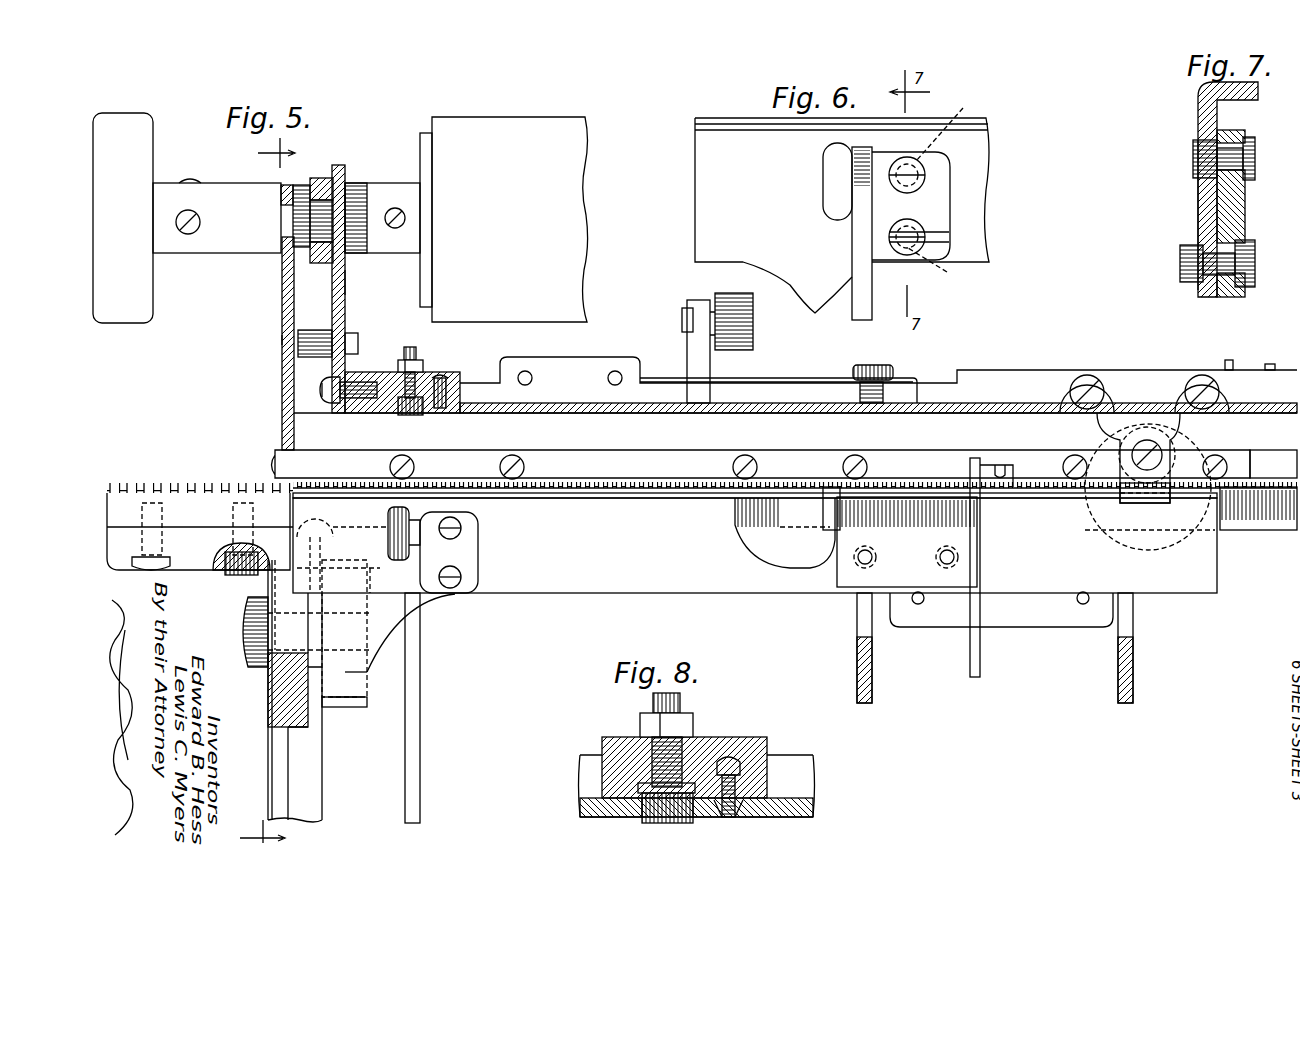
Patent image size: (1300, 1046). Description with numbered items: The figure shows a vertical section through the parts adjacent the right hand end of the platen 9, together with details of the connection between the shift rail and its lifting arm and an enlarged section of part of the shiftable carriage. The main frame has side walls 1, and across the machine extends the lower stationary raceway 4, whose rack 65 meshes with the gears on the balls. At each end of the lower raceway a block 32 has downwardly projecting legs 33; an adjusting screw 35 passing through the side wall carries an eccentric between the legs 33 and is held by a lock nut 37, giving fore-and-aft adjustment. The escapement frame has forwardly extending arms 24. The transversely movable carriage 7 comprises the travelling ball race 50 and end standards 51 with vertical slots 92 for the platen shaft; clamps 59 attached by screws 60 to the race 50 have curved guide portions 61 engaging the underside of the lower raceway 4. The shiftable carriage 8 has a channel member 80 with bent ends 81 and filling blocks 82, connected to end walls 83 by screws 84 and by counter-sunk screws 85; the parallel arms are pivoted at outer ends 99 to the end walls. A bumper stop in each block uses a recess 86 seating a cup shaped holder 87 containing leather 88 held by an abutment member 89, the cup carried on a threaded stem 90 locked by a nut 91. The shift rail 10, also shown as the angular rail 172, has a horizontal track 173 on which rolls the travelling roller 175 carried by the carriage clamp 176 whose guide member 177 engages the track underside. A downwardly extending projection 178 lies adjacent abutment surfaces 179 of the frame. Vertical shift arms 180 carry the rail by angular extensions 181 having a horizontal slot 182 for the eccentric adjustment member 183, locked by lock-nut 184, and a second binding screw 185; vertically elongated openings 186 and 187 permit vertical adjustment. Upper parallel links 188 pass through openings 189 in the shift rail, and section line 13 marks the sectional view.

In FIG. 5, the side walls 1 is at (322, 770).
In FIG. 5, the lower stationary raceway 4 is at (1262, 527).
In FIG. 5, the transversely movable carriage 7 is at (281, 327).
In FIG. 5, the shiftable carriage 8 is at (346, 297).
In FIG. 5, the platen 9 is at (510, 219).
In FIG. 5, the shift rail 10 is at (755, 594).
In FIG. 6, the shift rail 10 is at (693, 250).
In FIG. 7, the shift rail 10 is at (1195, 147).
In FIG. 5, the section line 13 is at (278, 493).
In FIG. 5, the forwardly extending arms 24 is at (857, 672).
In FIG. 5, the block 32 is at (221, 555).
In FIG. 5, the downwardly projecting legs 33 is at (370, 700).
In FIG. 5, the adjusting screw 35 is at (248, 650).
In FIG. 5, the lock nut 37 is at (268, 662).
In FIG. 5, the travelling ball race 50 is at (616, 455).
In FIG. 5, the end standards 51 is at (282, 340).
In FIG. 5, the clamps 59 is at (814, 508).
In FIG. 5, the screws 60 is at (840, 467).
In FIG. 5, the guide portions 61 is at (796, 535).
In FIG. 5, the rack 65 is at (179, 483).
In FIG. 5, the channel member 80 is at (478, 383).
In FIG. 8, the channel member 80 is at (790, 755).
In FIG. 5, the bent ends 81 is at (357, 377).
In FIG. 5, the filling blocks 82 is at (440, 372).
In FIG. 8, the filling blocks 82 is at (737, 737).
In FIG. 5, the end walls 83 is at (346, 283).
In FIG. 5, the screws 84 is at (328, 401).
In FIG. 5, the counter-sunk screws 85 is at (440, 408).
In FIG. 8, the counter-sunk screws 85 is at (733, 817).
In FIG. 8, the recess 86 is at (638, 785).
In FIG. 8, the cup shaped holder 87 is at (640, 805).
In FIG. 8, the piece of leather 88 is at (657, 820).
In FIG. 8, the abutment member 89 is at (680, 820).
In FIG. 5, the threaded stem 90 is at (410, 347).
In FIG. 8, the threaded stem 90 is at (680, 705).
In FIG. 5, the nut 91 is at (418, 360).
In FIG. 8, the nut 91 is at (640, 725).
In FIG. 5, the vertical slots 92 is at (281, 185).
In FIG. 5, the outer ends 99 is at (325, 328).
In FIG. 5, the shift rail 172 is at (530, 594).
In FIG. 6, the shift rail 172 is at (990, 170).
In FIG. 7, the shift rail 172 is at (1210, 225).
In FIG. 5, the horizontal track 173 is at (614, 499).
In FIG. 6, the horizontal track 173 is at (990, 127).
In FIG. 5, the travelling roller 175 is at (1178, 445).
In FIG. 5, the carriage clamp 176 is at (1060, 385).
In FIG. 5, the guide member 177 is at (1130, 505).
In FIG. 5, the downwardly extending projection 178 is at (345, 712).
In FIG. 5, the abutment surfaces 179 is at (345, 678).
In FIG. 5, the vertical shift arms 180 is at (420, 715).
In FIG. 5, the angular extensions 181 is at (478, 545).
In FIG. 6, the angular extensions 181 is at (952, 197).
In FIG. 7, the angular extensions 181 is at (1246, 218).
In FIG. 6, the horizontal slot 182 is at (935, 233).
In FIG. 6, the eccentric adjustment member 183 is at (925, 245).
In FIG. 7, the eccentric adjustment member 183 is at (1256, 272).
In FIG. 7, the lock-nut 184 is at (1190, 283).
In FIG. 6, the second binding screw 185 is at (926, 170).
In FIG. 7, the second binding screw 185 is at (1256, 168).
In FIG. 6, the vertically elongated opening 186 is at (941, 270).
In FIG. 7, the vertically elongated opening 186 is at (1228, 297).
In FIG. 6, the vertically elongated opening 187 is at (947, 129).
In FIG. 7, the vertically elongated opening 187 is at (1232, 131).
In FIG. 5, the upper parallel links 188 is at (392, 545).
In FIG. 5, the openings 189 is at (388, 512).
In FIG. 6, the openings 189 is at (832, 178).